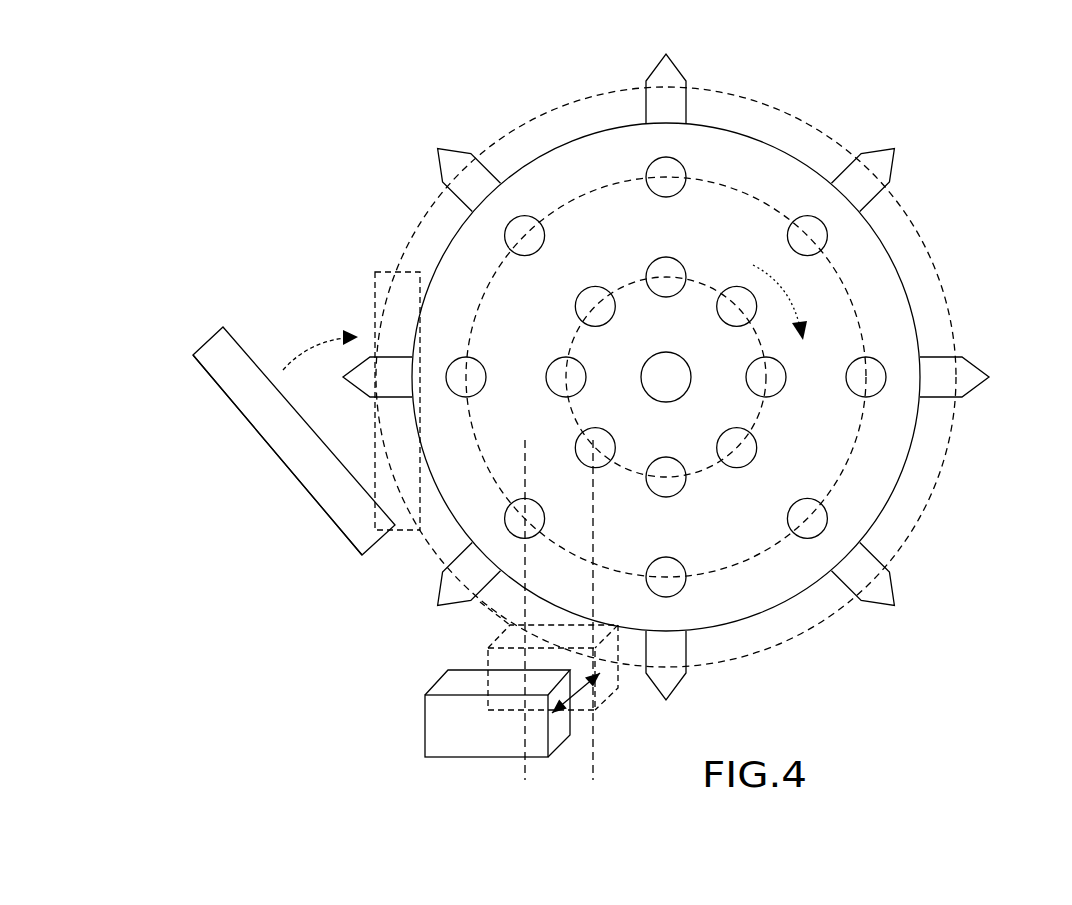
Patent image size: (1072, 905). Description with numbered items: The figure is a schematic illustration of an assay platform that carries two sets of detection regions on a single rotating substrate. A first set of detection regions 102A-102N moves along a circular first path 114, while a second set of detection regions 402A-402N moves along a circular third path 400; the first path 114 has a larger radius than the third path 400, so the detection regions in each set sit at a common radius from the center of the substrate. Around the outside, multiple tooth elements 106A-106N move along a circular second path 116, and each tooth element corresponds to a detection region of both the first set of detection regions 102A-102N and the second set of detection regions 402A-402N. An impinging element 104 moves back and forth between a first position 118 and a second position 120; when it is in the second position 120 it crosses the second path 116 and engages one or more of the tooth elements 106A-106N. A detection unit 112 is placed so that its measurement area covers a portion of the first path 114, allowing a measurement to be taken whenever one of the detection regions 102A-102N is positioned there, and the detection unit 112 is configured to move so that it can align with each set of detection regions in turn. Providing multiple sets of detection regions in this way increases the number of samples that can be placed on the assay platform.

The detection regions 102A-102N is at (537, 213).
The impinging element 104 is at (237, 347).
The tooth elements 106A-106N is at (500, 183).
The detection unit 112 is at (425, 737).
The first path 114 is at (783, 212).
The second path 116 is at (922, 520).
The first position 118 is at (248, 413).
The second position 120 is at (384, 272).
The third path 400 is at (758, 412).
The second set of detection regions 402A-402N is at (607, 283).